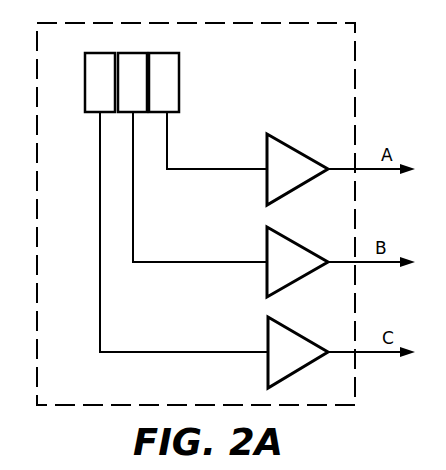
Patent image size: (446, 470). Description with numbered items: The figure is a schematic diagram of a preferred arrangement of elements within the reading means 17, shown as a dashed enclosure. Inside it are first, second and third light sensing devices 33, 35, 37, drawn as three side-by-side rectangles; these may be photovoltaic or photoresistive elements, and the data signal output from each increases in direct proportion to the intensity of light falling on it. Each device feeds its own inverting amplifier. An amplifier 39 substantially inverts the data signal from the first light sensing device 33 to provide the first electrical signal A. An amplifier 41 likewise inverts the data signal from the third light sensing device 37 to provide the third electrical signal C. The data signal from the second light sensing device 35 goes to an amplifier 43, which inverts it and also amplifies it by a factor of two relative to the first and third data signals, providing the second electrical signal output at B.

The reading means 17 is at (356, 87).
The first light sensing device 33 is at (168, 82).
The second light sensing device 35 is at (130, 62).
The third light sensing device 37 is at (100, 77).
The amplifier 39 is at (303, 156).
The amplifier 41 is at (305, 341).
The amplifier 43 is at (305, 251).